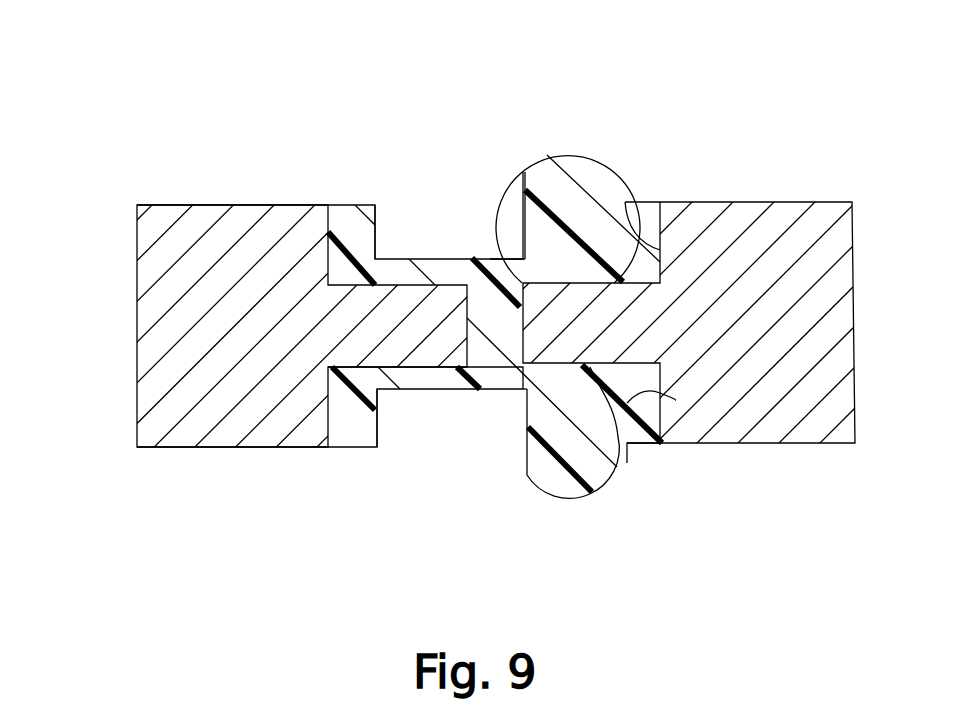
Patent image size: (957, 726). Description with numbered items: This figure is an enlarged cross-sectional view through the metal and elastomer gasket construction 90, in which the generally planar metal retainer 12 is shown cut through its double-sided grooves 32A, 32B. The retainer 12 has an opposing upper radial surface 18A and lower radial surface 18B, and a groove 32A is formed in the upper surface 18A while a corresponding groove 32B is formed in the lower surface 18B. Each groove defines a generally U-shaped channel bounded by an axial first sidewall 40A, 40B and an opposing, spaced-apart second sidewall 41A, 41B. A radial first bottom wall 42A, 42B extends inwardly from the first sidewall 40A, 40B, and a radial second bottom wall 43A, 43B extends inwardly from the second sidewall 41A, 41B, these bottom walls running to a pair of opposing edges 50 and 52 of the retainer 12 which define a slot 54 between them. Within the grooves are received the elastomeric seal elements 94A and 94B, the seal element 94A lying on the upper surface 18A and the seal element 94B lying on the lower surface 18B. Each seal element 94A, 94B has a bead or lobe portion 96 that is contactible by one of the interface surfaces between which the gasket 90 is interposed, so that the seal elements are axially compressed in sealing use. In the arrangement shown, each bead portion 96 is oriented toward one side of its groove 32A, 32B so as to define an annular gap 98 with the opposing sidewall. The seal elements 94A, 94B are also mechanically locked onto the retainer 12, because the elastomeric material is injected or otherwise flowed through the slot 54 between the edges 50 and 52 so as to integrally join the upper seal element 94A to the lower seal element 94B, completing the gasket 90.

The retainer 12 is at (137, 292).
The upper radial surface 18A is at (187, 180).
The lower radial surface 18B is at (178, 456).
The groove 32A is at (497, 155).
The groove 32B is at (505, 498).
The first sidewall 40A is at (342, 212).
The first sidewall 40B is at (345, 447).
The second sidewall 41A is at (650, 201).
The second sidewall 41B is at (627, 446).
The first bottom wall 42A is at (390, 206).
The first bottom wall 42B is at (378, 447).
The second bottom wall 43A is at (625, 201).
The second bottom wall 43B is at (614, 470).
The edge 50 is at (470, 258).
The edge 52 is at (526, 172).
The slot 54 is at (487, 370).
The gasket construction 90 is at (760, 66).
The seal element 94A is at (656, 202).
The seal element 94B is at (660, 443).
The bead portion 96 is at (568, 154).
The annular gap 98 is at (452, 243).